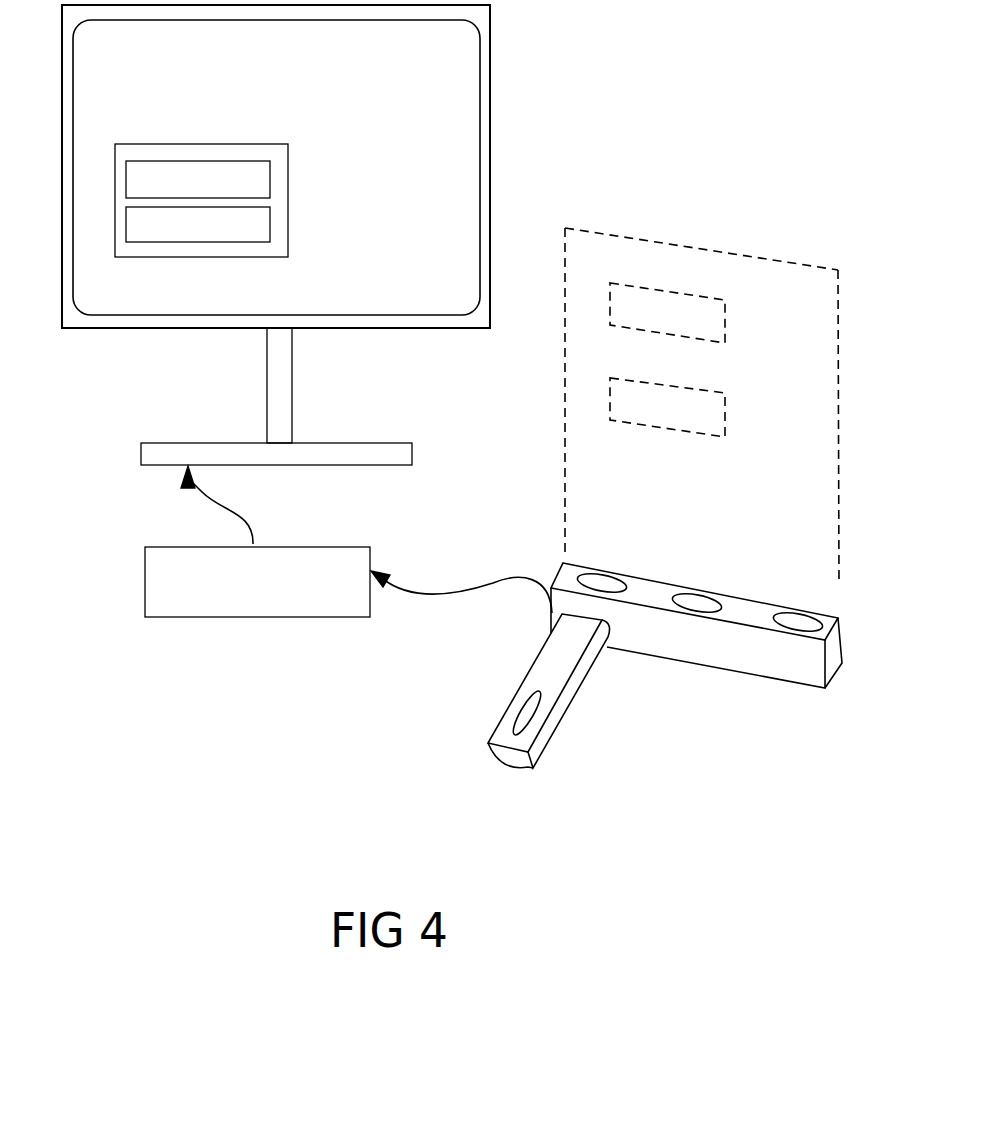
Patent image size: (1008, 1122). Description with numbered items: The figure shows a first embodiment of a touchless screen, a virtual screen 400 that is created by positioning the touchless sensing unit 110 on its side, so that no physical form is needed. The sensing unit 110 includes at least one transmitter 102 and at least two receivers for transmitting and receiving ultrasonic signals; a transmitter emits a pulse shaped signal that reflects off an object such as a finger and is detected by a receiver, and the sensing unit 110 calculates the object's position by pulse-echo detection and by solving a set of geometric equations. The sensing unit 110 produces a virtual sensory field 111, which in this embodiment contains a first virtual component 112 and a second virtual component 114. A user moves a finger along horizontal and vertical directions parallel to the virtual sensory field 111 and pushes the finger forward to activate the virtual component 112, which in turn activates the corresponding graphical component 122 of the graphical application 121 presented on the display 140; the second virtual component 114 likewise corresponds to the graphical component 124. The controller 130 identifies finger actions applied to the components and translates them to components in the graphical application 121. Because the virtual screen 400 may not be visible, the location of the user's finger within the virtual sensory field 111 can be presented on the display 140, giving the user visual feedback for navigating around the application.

The virtual screen 400 is at (642, 97).
The display 140 is at (348, 329).
The graphical application 121 is at (231, 147).
The graphical component 122 is at (270, 178).
The graphical component 124 is at (270, 232).
The controller 130 is at (145, 578).
The virtual sensory field 111 is at (742, 255).
The virtual component 112 is at (725, 322).
The virtual component 114 is at (725, 423).
The sensing unit 110 is at (797, 667).
The transmitter 102 is at (602, 578).